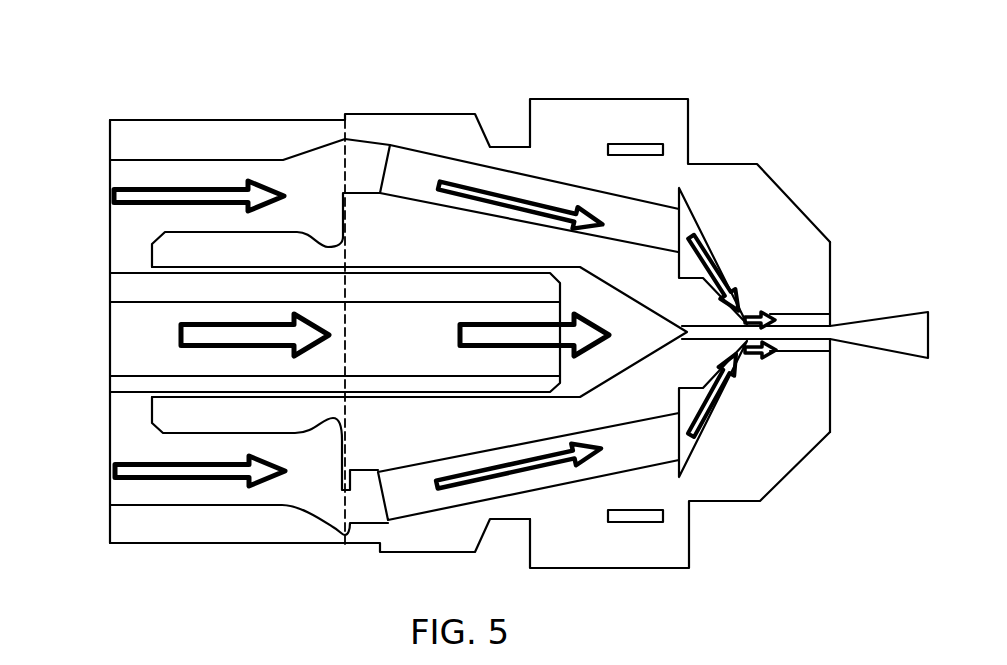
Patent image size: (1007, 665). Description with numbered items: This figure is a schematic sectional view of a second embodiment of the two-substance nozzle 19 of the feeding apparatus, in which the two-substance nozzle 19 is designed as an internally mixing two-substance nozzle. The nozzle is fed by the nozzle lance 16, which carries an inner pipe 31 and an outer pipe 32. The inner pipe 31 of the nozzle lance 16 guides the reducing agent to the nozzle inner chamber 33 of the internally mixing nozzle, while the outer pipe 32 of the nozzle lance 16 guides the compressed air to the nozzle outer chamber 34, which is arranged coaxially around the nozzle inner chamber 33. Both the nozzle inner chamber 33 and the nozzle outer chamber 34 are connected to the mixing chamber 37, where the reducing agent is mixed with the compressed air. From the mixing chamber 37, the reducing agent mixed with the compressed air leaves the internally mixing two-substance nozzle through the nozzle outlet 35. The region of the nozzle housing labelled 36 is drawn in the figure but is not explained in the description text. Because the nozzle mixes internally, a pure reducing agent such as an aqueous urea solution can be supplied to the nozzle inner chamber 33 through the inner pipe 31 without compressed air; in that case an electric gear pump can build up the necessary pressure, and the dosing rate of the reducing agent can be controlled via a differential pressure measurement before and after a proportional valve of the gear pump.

The nozzle lance 16 is at (122, 47).
The two-substance nozzle 19 is at (688, 70).
The inner pipe 31 is at (115, 282).
The outer pipe 32 is at (123, 177).
The nozzle inner chamber 33 is at (667, 337).
The nozzle outer chamber 34 is at (480, 483).
The nozzle outlet 35 is at (848, 307).
The housing chamber 36 is at (807, 397).
The mixing chamber 37 is at (793, 312).